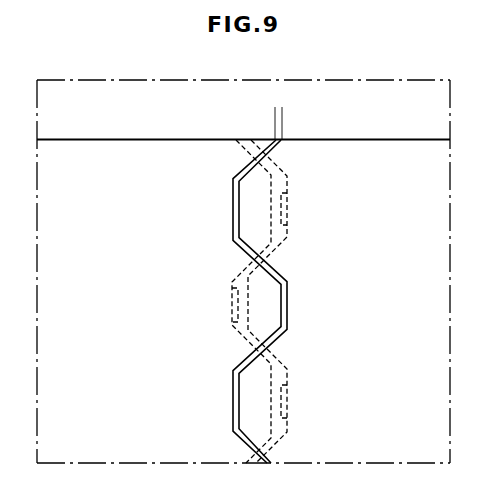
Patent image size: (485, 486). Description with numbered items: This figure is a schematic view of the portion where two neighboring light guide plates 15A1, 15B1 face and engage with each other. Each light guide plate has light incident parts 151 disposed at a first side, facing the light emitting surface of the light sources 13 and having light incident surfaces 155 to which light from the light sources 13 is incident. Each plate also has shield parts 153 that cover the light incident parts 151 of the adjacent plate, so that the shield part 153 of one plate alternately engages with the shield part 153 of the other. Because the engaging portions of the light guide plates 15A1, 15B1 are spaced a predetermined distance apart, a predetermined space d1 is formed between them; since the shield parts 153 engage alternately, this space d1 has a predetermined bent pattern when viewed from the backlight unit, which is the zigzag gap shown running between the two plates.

The light source 13 is at (283, 210).
The light guide plate 15A1 is at (129, 156).
The light guide plate 15B1 is at (387, 156).
The light incident part 151 is at (232, 283).
The shield part 153 is at (238, 174).
The light incident surface 155 is at (289, 301).
The space d1 is at (250, 111).